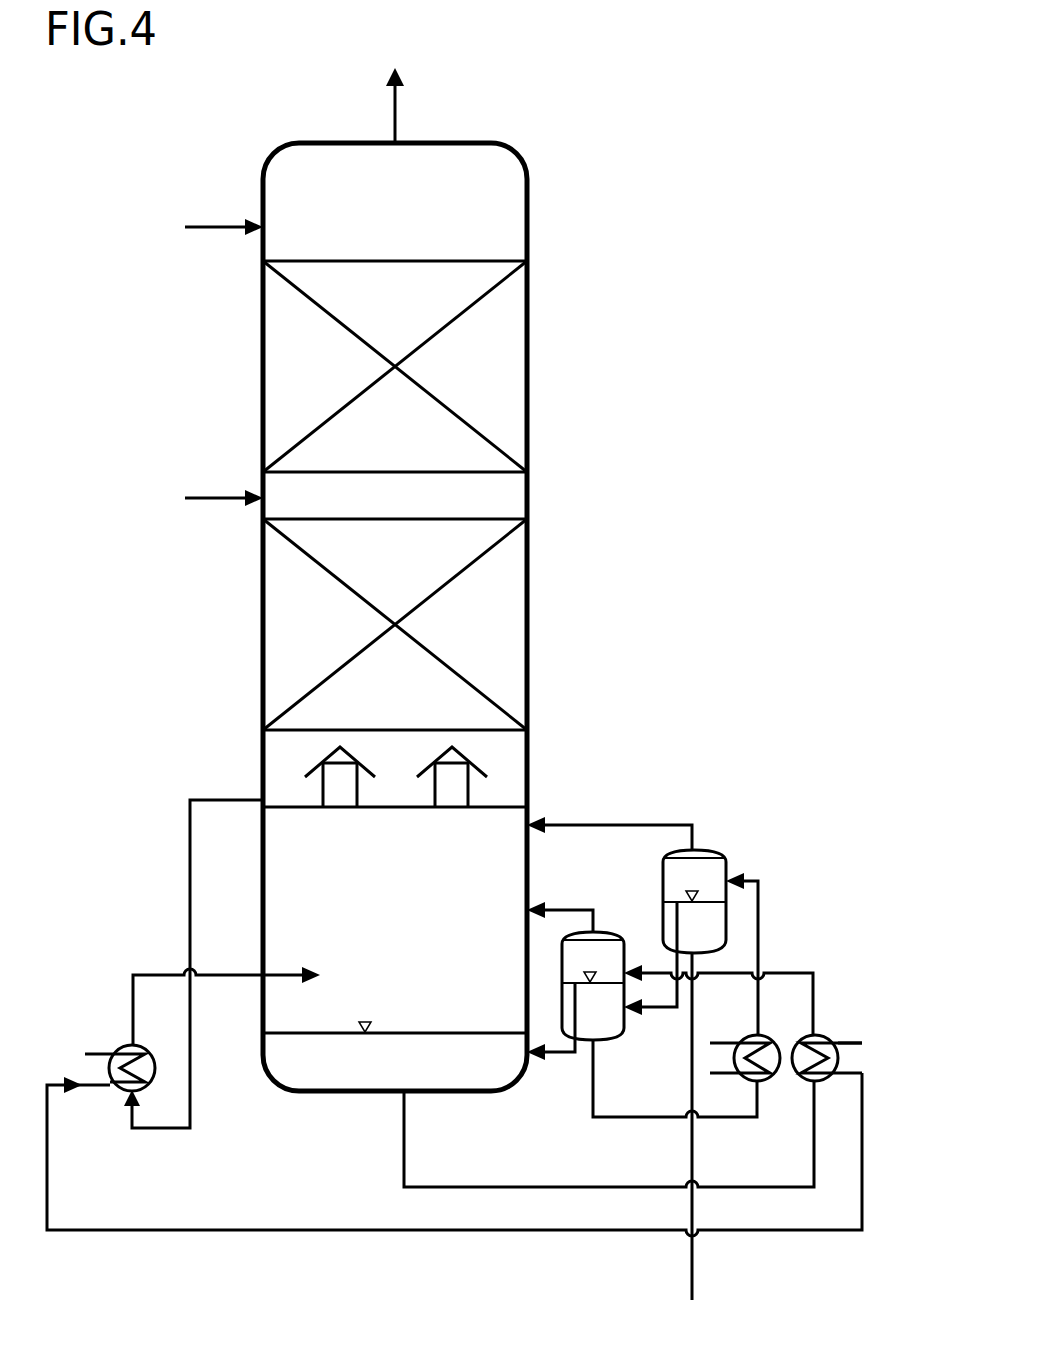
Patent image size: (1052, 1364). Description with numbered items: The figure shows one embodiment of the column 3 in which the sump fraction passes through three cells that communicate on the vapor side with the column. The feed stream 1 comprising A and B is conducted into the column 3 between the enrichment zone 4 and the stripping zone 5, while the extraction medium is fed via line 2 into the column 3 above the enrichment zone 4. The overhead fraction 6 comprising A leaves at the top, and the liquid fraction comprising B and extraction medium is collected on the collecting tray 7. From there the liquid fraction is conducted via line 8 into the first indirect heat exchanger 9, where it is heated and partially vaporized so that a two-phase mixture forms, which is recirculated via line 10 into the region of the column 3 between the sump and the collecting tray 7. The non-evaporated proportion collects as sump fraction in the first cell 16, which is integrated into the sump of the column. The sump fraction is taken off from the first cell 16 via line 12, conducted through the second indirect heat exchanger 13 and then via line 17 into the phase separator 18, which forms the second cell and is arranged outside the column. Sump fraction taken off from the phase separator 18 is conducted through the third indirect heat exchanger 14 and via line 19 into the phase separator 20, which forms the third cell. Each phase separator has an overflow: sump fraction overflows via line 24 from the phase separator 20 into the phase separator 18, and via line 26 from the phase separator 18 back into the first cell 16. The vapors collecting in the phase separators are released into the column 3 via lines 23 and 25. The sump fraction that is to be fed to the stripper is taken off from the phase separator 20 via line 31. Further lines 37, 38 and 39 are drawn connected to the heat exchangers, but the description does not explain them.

The feed stream 1 is at (226, 496).
The line for extraction medium 2 is at (226, 224).
The column 3 is at (527, 221).
The enrichment zone 4 is at (496, 448).
The stripping zone 5 is at (498, 706).
The overhead fraction 6 is at (397, 115).
The collecting tray 7 is at (505, 806).
The line 8 is at (226, 799).
The first indirect heat exchanger 9 is at (118, 1050).
The line 10 is at (155, 974).
The line 12 is at (404, 1158).
The second indirect heat exchanger 13 is at (822, 1042).
The third indirect heat exchanger 14 is at (766, 1042).
The first cell 16 is at (291, 1076).
The line 17 is at (790, 975).
The phase separator 18 is at (610, 946).
The line 19 is at (760, 907).
The phase separator 20 is at (705, 864).
The line 23 is at (616, 826).
The line 24 is at (652, 1015).
The line 25 is at (556, 906).
The line 26 is at (549, 1062).
The line 31 is at (692, 1278).
The heating medium line 37 is at (862, 1050).
The heating medium line 38 is at (58, 1092).
The heating medium outlet line 39 is at (95, 1053).